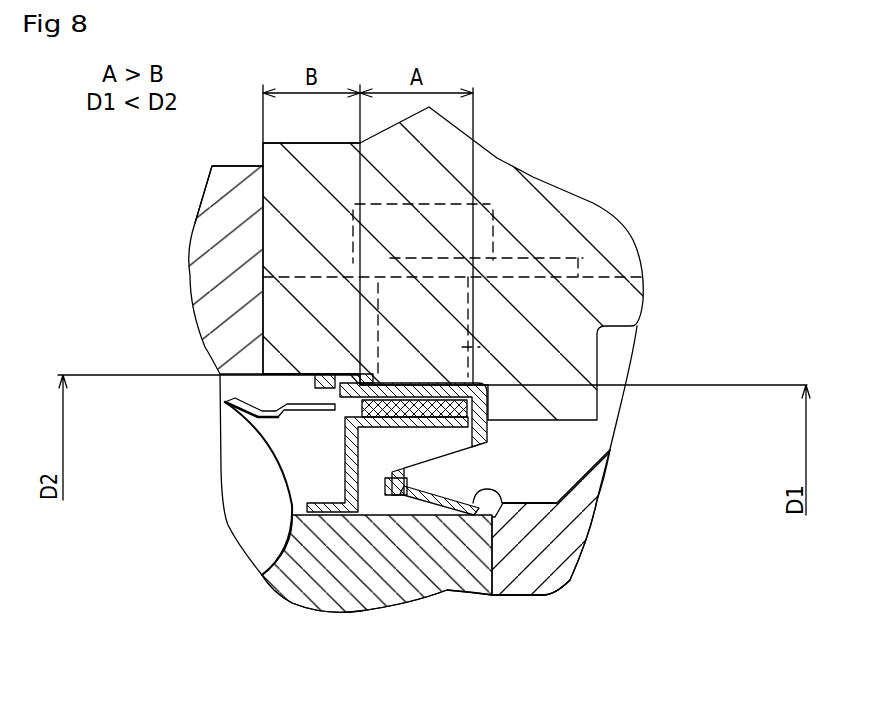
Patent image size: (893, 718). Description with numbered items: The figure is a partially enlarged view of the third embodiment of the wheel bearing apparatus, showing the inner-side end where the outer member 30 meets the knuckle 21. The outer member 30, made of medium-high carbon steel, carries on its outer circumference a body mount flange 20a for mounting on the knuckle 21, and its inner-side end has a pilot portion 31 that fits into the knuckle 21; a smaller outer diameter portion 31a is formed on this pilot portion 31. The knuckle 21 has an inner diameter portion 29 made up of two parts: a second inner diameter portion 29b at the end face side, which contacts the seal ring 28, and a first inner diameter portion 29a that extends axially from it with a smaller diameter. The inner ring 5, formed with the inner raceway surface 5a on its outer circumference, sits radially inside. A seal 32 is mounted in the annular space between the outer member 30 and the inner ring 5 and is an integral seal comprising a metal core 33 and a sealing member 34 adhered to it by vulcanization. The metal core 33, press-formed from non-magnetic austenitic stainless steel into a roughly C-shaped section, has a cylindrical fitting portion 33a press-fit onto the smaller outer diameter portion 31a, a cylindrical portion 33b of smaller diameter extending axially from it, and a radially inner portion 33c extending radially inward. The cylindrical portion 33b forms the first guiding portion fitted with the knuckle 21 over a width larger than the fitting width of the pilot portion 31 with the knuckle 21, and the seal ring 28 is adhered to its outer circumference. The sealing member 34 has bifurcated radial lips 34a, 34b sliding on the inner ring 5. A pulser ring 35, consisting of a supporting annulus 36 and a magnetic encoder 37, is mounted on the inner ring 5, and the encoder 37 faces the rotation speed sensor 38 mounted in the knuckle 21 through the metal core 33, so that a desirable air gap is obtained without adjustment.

The inner ring 5 is at (338, 537).
The inner raceway surface 5a is at (257, 542).
The body mount flange 20a is at (232, 187).
The knuckle 21 is at (533, 183).
The seal ring 28 is at (317, 408).
The inner diameter portion 29 is at (375, 313).
The first inner diameter portion 29a is at (424, 338).
The second inner diameter portion 29b is at (305, 380).
The outer member 30 is at (213, 257).
The pilot portion 31 is at (280, 372).
The smaller outer diameter portion 31a is at (332, 372).
The seal 32 is at (556, 494).
The metal core 33 is at (526, 452).
The cylindrical fitting portion 33a is at (470, 466).
The cylindrical portion 33b is at (490, 430).
The radially inner portion 33c is at (517, 499).
The sealing member 34 is at (595, 527).
The radial lip 34a is at (492, 567).
The radial lip 34b is at (557, 542).
The pulser ring 35 is at (283, 456).
The supporting annulus 36 is at (345, 475).
The magnetic encoder 37 is at (345, 418).
The rotation speed sensor 38 is at (470, 352).